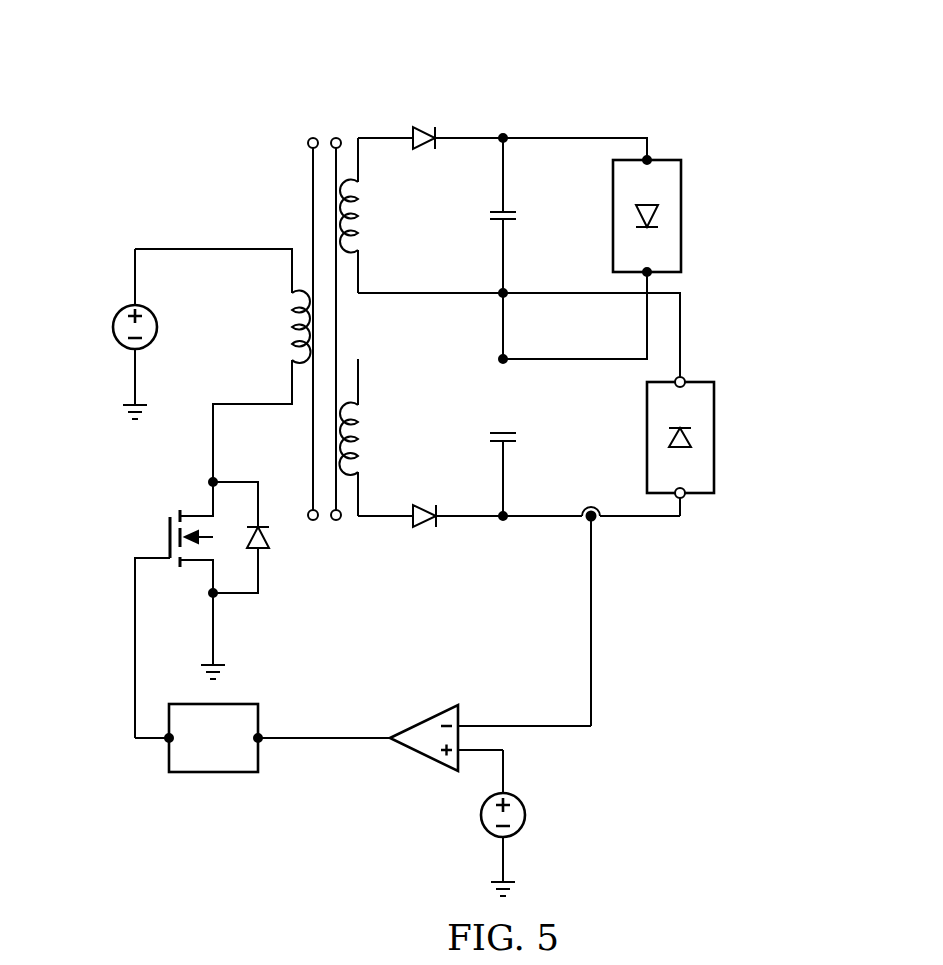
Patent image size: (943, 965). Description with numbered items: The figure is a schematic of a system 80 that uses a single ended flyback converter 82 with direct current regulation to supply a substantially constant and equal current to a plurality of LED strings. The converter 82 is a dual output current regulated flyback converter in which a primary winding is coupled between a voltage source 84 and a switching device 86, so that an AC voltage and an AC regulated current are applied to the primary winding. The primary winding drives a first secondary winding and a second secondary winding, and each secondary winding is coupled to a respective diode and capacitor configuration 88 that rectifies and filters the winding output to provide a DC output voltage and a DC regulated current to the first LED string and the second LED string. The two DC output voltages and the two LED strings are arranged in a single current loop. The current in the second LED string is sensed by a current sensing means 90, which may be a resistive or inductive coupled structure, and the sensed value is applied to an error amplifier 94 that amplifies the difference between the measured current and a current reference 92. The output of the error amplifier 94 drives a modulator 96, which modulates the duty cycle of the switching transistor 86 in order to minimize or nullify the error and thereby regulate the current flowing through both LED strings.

The system 80 is at (620, 85).
The single ended flyback converter 82 is at (213, 182).
The voltage source 84 is at (92, 302).
The switching device 86 is at (188, 497).
The diode and capacitor configuration 88 is at (480, 207).
The current sensing means 90 is at (597, 523).
The current reference 92 is at (542, 845).
The error amplifier 94 is at (423, 757).
The modulator 96 is at (199, 753).